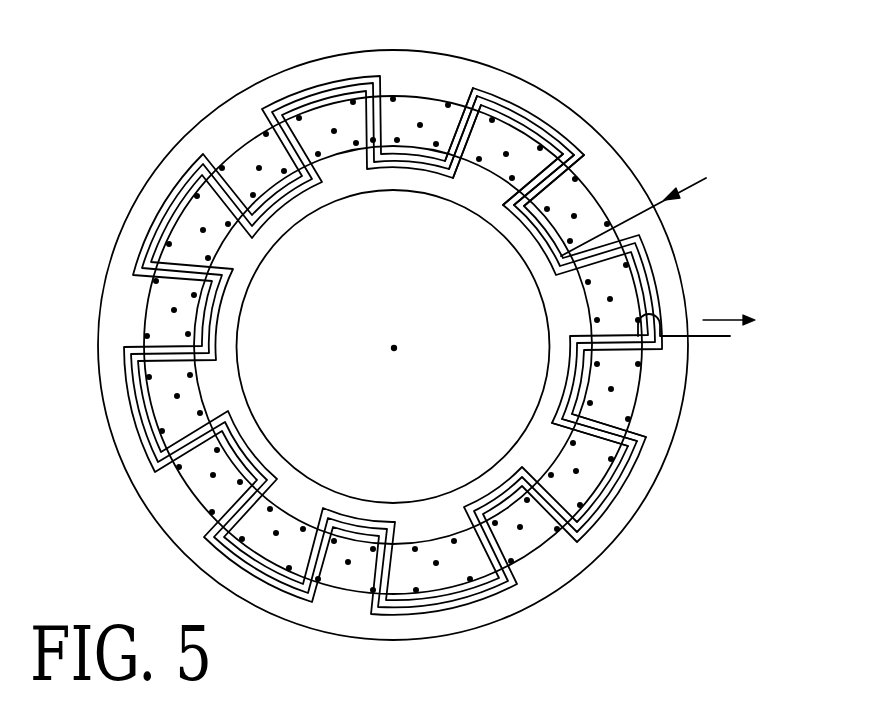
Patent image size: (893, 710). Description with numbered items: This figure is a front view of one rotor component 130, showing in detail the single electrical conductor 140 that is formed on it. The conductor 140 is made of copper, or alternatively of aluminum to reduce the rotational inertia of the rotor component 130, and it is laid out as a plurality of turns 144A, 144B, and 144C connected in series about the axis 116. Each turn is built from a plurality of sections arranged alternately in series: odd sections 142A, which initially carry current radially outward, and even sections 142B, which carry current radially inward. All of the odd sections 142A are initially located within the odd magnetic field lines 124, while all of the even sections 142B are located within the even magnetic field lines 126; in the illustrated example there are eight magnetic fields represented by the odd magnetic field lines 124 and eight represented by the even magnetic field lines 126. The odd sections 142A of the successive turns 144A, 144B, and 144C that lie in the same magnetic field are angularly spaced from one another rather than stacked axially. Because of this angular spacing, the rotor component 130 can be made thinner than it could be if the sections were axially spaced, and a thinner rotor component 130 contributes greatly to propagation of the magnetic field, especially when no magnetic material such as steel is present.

The axis 116 is at (396, 346).
The odd magnetic field lines 124 is at (373, 143).
The even magnetic field lines 126 is at (280, 132).
The rotor component 130 is at (102, 298).
The conductor 140 is at (677, 200).
The odd sections 142A is at (560, 157).
The even sections 142B is at (471, 93).
The first turn 144A is at (639, 435).
The second turn 144B is at (630, 439).
The third turn 144C is at (620, 444).